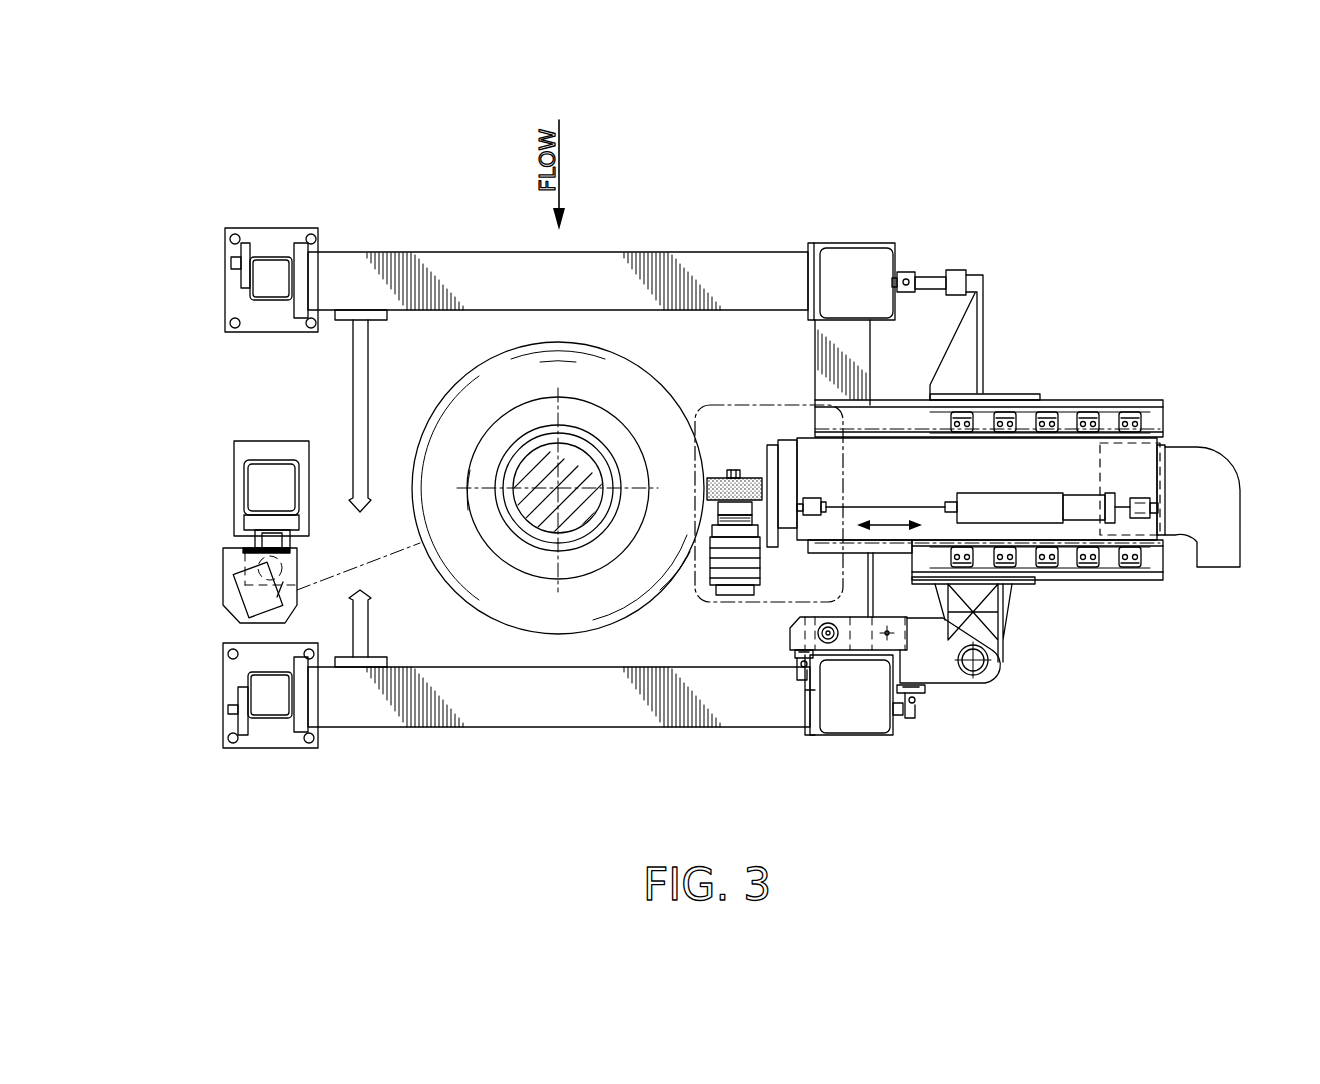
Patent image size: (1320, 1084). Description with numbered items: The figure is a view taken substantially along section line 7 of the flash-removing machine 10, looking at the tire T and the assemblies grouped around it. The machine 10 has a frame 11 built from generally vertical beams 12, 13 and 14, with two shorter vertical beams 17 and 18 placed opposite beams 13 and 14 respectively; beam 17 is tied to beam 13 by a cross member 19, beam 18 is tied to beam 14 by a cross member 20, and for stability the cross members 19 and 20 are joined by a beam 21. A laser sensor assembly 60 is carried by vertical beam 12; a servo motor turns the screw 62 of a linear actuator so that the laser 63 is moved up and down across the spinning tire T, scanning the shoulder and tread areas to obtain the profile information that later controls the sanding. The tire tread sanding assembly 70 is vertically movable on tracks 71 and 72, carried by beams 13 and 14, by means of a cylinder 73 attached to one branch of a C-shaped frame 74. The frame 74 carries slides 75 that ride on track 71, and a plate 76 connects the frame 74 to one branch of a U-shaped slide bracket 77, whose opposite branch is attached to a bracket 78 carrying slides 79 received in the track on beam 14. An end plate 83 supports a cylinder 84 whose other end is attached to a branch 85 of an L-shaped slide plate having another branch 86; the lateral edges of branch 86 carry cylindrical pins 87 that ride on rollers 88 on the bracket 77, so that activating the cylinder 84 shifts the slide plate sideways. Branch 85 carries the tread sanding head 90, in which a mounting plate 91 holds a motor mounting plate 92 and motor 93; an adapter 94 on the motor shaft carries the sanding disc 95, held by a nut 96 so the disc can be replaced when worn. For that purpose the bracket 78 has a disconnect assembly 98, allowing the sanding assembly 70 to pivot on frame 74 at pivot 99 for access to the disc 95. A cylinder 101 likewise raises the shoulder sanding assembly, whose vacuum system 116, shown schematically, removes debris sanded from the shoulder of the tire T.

The section line 7 is at (771, 405).
The machine for removing flash from a tire 10 is at (1170, 186).
The frame 11 is at (655, 240).
The vertical beam 12 is at (245, 487).
The vertical beam 13 is at (860, 735).
The vertical beam 14 is at (847, 243).
The shorter vertical beam 17 is at (272, 718).
The shorter vertical beam 18 is at (250, 292).
The cross member 19 is at (565, 712).
The cross member 20 is at (485, 283).
The beam 21 is at (362, 417).
The laser sensor assembly 60 is at (270, 596).
The screw 62 is at (255, 590).
The laser 63 is at (260, 612).
The tire tread sanding assembly 70 is at (972, 576).
The track 71 is at (800, 665).
The track 72 is at (905, 280).
The cylinder 73 is at (905, 645).
The C-shaped frame 74 is at (983, 680).
The slides 75 is at (797, 655).
The plate 76 is at (992, 608).
The U-shaped slide bracket 77 is at (1085, 405).
The bracket 78 is at (968, 372).
The slides 79 is at (914, 279).
The end plate 83 is at (1158, 505).
The cylinder 84 is at (988, 505).
The branch 85 is at (788, 497).
The branch 86 is at (1100, 460).
The cylindrical pins 87 is at (913, 428).
The rollers 88 is at (1130, 412).
The tread sanding head 90 is at (739, 475).
The mounting plate 91 is at (773, 470).
The motor mounting plate 92 is at (738, 530).
The motor 93 is at (740, 596).
The adapter 94 is at (747, 508).
The sanding disc 95 is at (745, 490).
The nut 96 is at (728, 474).
The disconnect assembly 98 is at (940, 275).
The pivot 99 is at (975, 665).
The cylinder 101 is at (800, 628).
The vacuum system 116 is at (1222, 515).
The tire T is at (488, 385).